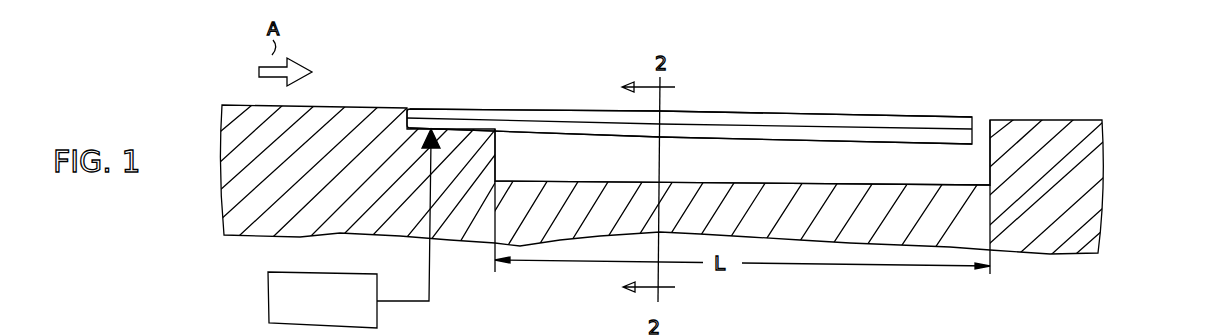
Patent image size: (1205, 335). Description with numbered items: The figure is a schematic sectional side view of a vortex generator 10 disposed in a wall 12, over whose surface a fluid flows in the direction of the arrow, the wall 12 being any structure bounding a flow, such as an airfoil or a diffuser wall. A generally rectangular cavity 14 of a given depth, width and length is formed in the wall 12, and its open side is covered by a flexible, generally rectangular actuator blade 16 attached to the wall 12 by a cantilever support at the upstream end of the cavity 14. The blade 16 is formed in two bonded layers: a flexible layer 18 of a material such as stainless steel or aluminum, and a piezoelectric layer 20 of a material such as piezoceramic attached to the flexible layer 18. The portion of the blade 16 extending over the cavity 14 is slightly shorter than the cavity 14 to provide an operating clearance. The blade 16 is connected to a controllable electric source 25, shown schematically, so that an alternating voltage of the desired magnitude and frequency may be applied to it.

The vortex generator 10 is at (1094, 30).
The wall 12 is at (1085, 182).
The cavity 14 is at (928, 174).
The actuator blade 16 is at (952, 114).
The flexible layer 18 is at (831, 122).
The piezoelectric layer 20 is at (852, 138).
The controllable electric source 25 is at (328, 311).